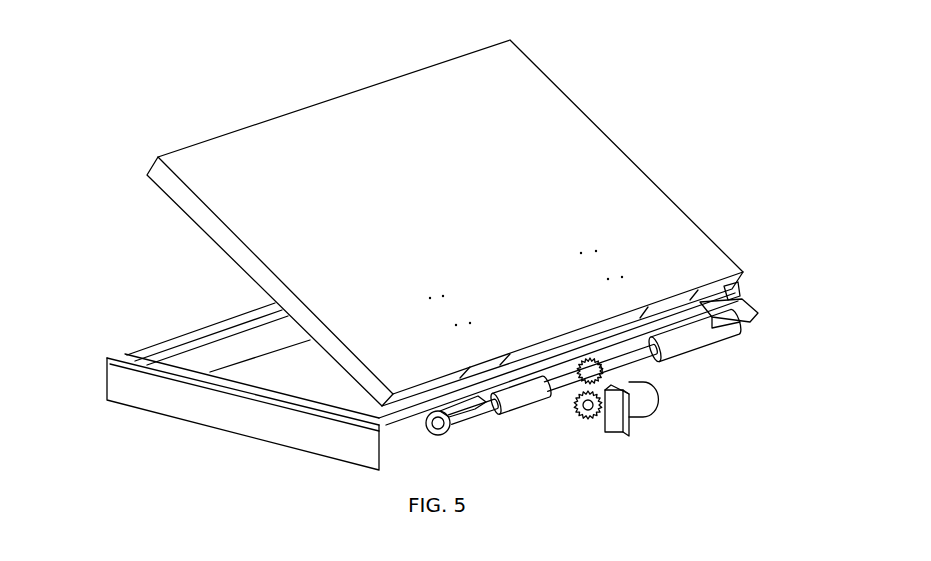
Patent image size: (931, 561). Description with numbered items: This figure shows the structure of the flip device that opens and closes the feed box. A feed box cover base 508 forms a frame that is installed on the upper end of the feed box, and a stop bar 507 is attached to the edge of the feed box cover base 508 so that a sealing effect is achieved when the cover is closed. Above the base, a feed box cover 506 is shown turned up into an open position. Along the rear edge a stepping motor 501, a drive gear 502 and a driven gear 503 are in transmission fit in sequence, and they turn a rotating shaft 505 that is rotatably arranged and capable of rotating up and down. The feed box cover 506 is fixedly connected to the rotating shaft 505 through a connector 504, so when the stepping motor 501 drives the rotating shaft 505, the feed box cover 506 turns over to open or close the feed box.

The stepping motor 501 is at (634, 405).
The drive gear 502 is at (606, 412).
The driven gear 503 is at (582, 405).
The connector 504 is at (497, 412).
The rotating shaft 505 is at (712, 318).
The feed box cover 506 is at (560, 147).
The stop bar 507 is at (160, 343).
The feed box cover base 508 is at (130, 385).